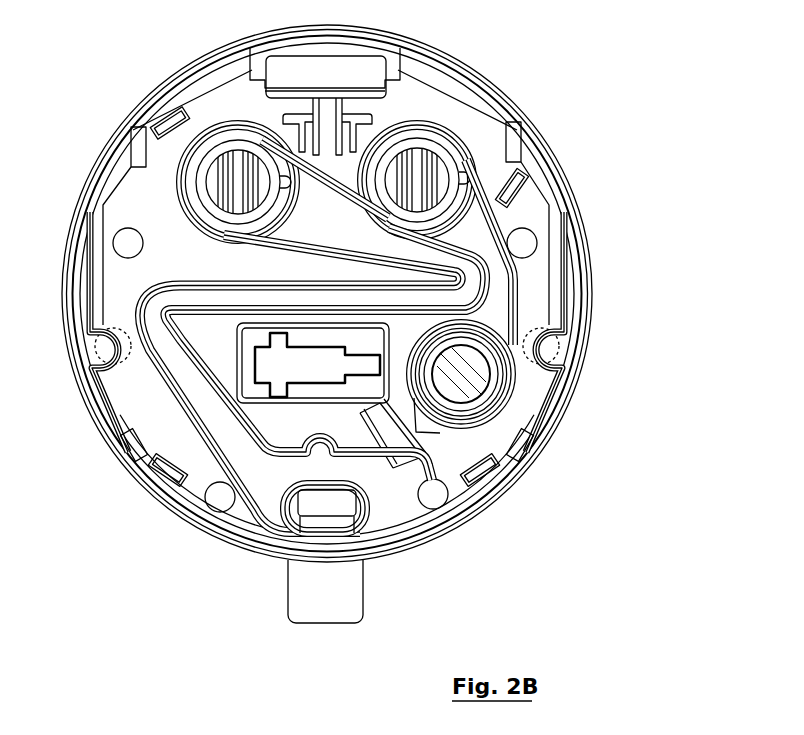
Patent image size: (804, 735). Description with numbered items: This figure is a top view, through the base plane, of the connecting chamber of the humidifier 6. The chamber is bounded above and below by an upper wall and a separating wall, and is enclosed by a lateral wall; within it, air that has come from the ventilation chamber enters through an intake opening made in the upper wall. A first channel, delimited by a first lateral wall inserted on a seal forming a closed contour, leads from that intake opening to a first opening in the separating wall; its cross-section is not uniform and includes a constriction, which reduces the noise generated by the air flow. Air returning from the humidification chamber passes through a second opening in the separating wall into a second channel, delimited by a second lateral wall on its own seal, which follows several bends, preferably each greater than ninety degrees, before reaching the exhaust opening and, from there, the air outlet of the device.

The humidifier 6 is at (569, 128).